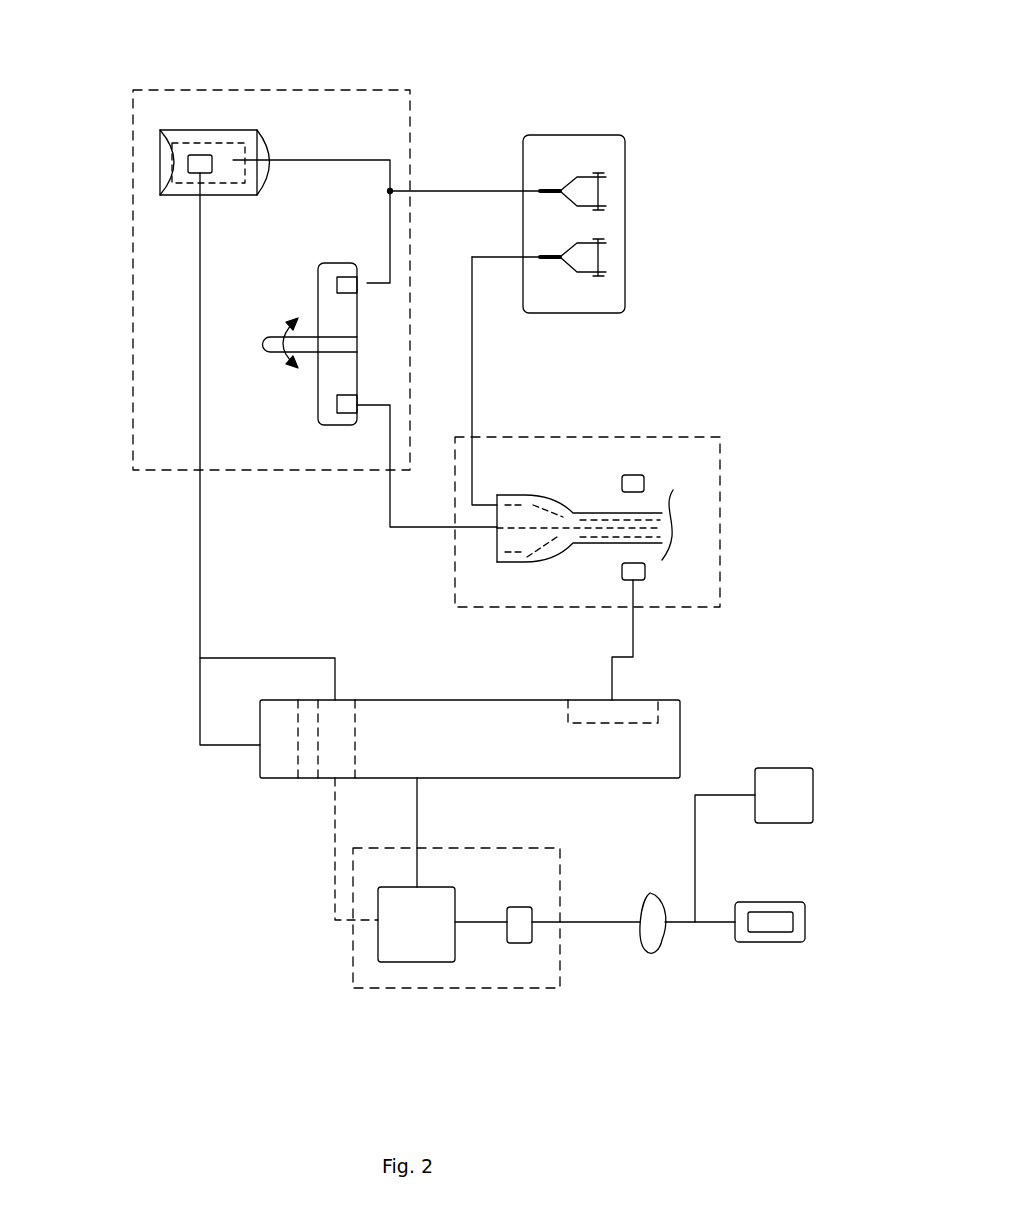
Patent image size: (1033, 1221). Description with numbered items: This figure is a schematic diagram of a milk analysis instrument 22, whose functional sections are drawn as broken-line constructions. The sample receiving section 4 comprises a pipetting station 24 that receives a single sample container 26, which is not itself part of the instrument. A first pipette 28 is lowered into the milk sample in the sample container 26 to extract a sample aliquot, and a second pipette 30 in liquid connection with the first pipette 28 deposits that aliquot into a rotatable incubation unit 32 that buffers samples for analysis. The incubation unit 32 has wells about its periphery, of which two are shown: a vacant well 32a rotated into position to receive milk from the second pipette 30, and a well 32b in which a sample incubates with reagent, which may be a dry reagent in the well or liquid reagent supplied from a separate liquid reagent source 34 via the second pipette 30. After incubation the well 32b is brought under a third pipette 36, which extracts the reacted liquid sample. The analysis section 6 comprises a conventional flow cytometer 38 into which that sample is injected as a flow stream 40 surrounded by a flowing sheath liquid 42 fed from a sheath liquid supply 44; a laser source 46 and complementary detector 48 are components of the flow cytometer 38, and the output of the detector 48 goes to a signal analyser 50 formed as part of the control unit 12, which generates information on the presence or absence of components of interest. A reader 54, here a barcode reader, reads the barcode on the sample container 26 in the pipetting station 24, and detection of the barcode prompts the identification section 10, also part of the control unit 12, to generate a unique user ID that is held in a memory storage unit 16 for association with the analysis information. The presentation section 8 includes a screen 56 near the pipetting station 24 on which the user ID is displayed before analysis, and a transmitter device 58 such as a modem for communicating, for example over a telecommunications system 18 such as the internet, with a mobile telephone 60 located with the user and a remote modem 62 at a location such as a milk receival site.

The sample receiving section 4 is at (172, 470).
The analysis section 6 is at (645, 428).
The presentation section 8 is at (508, 848).
The identification section 10 is at (336, 739).
The control unit 12 is at (472, 703).
The memory storage unit 16 is at (280, 739).
The telecommunications system 18 is at (648, 950).
The milk analysis instrument 22 is at (700, 157).
The pipetting station 24 is at (178, 131).
The sample container 26 is at (188, 197).
The first pipette 28 is at (235, 165).
The second pipette 30 is at (367, 284).
The rotatable incubation unit 32 is at (318, 373).
The vacant well 32a is at (338, 287).
The well 32b is at (350, 393).
The liquid reagent source 34 is at (597, 208).
The third pipette 36 is at (367, 412).
The flow cytometer 38 is at (552, 500).
The flow stream 40 is at (557, 543).
The sheath liquid 42 is at (522, 500).
The sheath liquid supply 44 is at (595, 270).
The laser source 46 is at (645, 482).
The detector 48 is at (645, 572).
The signal analyser 50 is at (610, 723).
The reader 54 is at (182, 163).
The screen 56 is at (416, 924).
The transmitter device 58 is at (504, 945).
The mobile telephone 60 is at (782, 942).
The modem 62 is at (784, 795).